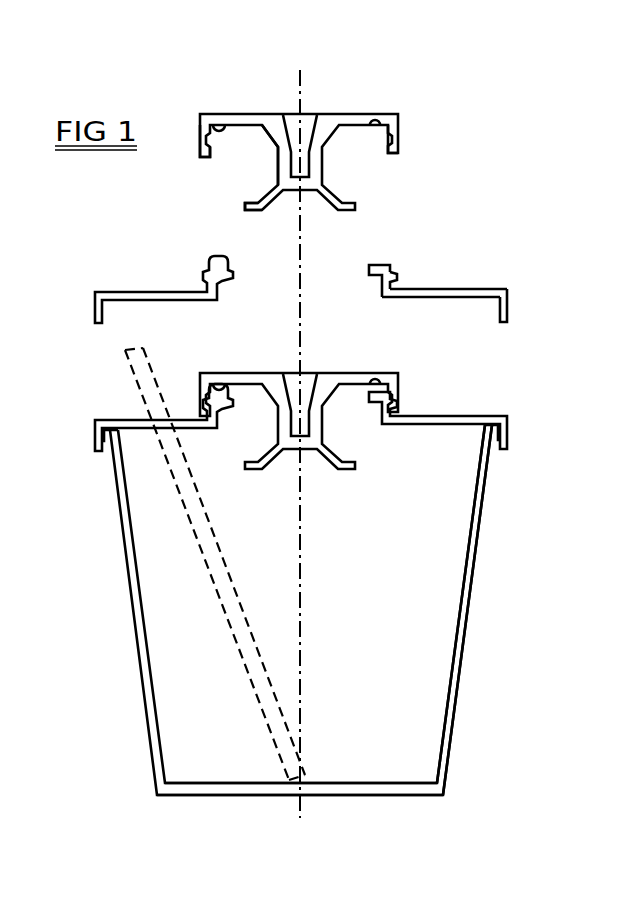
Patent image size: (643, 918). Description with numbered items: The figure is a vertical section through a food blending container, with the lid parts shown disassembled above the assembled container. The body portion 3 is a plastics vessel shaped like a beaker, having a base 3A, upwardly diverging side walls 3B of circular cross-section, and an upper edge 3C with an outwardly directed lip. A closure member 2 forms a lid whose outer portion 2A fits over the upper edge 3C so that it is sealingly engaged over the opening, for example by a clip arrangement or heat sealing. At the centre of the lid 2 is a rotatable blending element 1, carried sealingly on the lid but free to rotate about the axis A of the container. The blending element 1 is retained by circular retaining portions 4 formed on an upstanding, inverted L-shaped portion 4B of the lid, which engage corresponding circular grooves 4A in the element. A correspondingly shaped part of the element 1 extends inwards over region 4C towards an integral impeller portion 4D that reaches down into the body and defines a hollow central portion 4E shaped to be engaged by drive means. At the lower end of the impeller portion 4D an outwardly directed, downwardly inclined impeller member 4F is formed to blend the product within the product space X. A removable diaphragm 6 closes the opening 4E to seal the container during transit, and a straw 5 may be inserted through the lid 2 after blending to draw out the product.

The rotatable blending element 1 is at (292, 147).
The closure member 2 is at (343, 274).
The outer portion of the lid 2A is at (252, 303).
The body portion 3 is at (328, 613).
The base 3A is at (415, 796).
The side walls 3B is at (465, 641).
The upper edge 3C is at (500, 423).
The retaining portions 4 is at (396, 277).
The circular grooves 4A is at (220, 118).
The inverted L-shaped portion 4B is at (382, 293).
The region 4C is at (341, 126).
The impeller portion 4D is at (278, 160).
The hollow central portion 4E is at (290, 112).
The impeller member 4F is at (256, 211).
The straw 5 is at (197, 547).
The removable diaphragm 6 is at (290, 375).
The axis A is at (300, 563).
The product space X is at (388, 526).